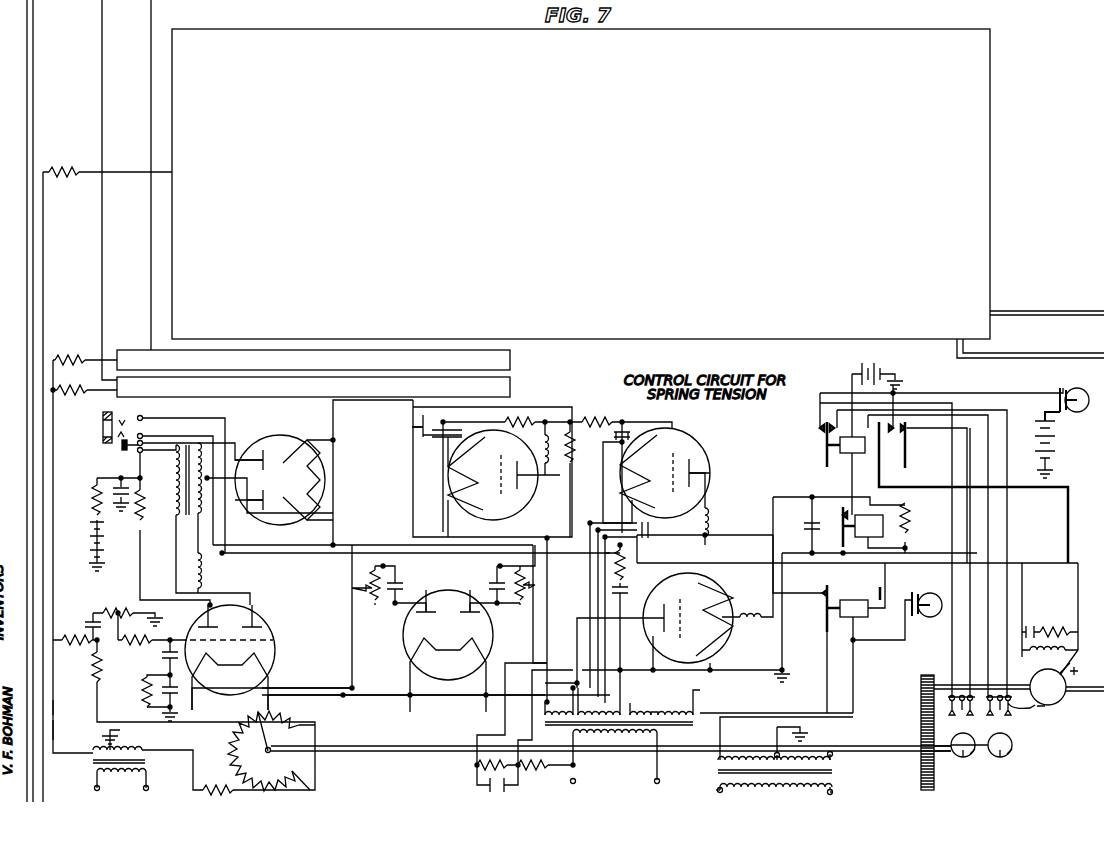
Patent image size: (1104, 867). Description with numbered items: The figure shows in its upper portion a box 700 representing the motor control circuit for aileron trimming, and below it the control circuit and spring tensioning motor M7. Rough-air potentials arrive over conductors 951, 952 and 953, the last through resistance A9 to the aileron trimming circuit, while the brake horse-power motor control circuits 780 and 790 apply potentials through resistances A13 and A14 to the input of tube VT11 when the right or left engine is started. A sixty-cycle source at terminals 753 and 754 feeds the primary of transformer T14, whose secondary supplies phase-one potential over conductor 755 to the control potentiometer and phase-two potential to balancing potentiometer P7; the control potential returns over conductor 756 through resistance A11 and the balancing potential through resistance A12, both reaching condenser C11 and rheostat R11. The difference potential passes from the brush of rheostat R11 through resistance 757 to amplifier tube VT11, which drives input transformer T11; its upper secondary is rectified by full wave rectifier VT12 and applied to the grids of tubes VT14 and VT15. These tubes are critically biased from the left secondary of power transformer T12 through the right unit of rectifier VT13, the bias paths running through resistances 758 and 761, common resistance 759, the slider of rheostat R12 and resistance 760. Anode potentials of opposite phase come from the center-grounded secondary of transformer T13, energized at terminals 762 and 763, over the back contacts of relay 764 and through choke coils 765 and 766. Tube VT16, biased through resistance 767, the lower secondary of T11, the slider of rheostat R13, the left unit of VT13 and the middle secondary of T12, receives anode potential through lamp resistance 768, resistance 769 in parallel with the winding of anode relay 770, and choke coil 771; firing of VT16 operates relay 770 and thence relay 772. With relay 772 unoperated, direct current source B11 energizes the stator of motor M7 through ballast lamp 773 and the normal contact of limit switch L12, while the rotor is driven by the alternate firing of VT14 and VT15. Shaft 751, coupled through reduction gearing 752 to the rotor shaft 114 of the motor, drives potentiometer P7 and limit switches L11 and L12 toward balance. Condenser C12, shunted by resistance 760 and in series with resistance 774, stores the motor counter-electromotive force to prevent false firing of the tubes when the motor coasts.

The control circuit for aileron trimming 700 is at (978, 105).
The conductor 951 is at (29, 226).
The conductor 952 is at (35, 246).
The conductor 953 is at (44, 266).
The resistance A9 is at (64, 168).
The resistance A13 is at (68, 356).
The resistance A14 is at (68, 395).
The brake horse-power motor control circuit 780 is at (510, 358).
The brake horse-power motor control circuit 790 is at (510, 386).
The input transformer T11 is at (190, 440).
The full wave rectifier tube VT12 is at (282, 434).
The amplifier tube VT11 is at (230, 606).
The condenser C11 is at (90, 617).
The rheostat R11 is at (118, 607).
The resistance 757 is at (154, 638).
The resistance A11 is at (85, 647).
The resistance A12 is at (101, 663).
The conductor 756 is at (56, 710).
The conductor 755 is at (54, 733).
The transformer T14 is at (150, 763).
The terminal 753 is at (95, 786).
The terminal 754 is at (148, 786).
The balancing potentiometer P7 is at (303, 733).
The tube VT14 is at (517, 503).
The resistance 758 is at (523, 415).
The resistance 761 is at (582, 415).
The choke coil 766 is at (549, 468).
The resistance 759 is at (572, 455).
The tube VT15 is at (707, 454).
The choke coil 765 is at (717, 521).
The rheostat R13 is at (377, 604).
The rheostat R12 is at (523, 604).
The rectifier tube VT13 is at (443, 592).
The resistance 767 is at (613, 553).
The tube VT16 is at (717, 645).
The choke coil 771 is at (755, 608).
The power supply transformer T12 is at (693, 721).
The resistance 760 is at (476, 765).
The resistance 774 is at (528, 777).
The condenser C12 is at (489, 787).
The transformer T13 is at (830, 773).
The terminal 762 is at (718, 790).
The terminal 763 is at (832, 792).
The relay 772 is at (838, 447).
The anode relay 770 is at (853, 507).
The resistance 769 is at (908, 505).
The relay 764 is at (838, 610).
The lamp resistance 768 is at (930, 618).
The ballast lamp 773 is at (1082, 390).
The direct current source B11 is at (1053, 430).
The rack gear 752 is at (920, 713).
The shaft 751 is at (870, 744).
The motor shaft 114 is at (1077, 696).
The spring tensioning motor M7 is at (1050, 619).
The limit switch L12 is at (963, 733).
The limit switch L11 is at (995, 720).